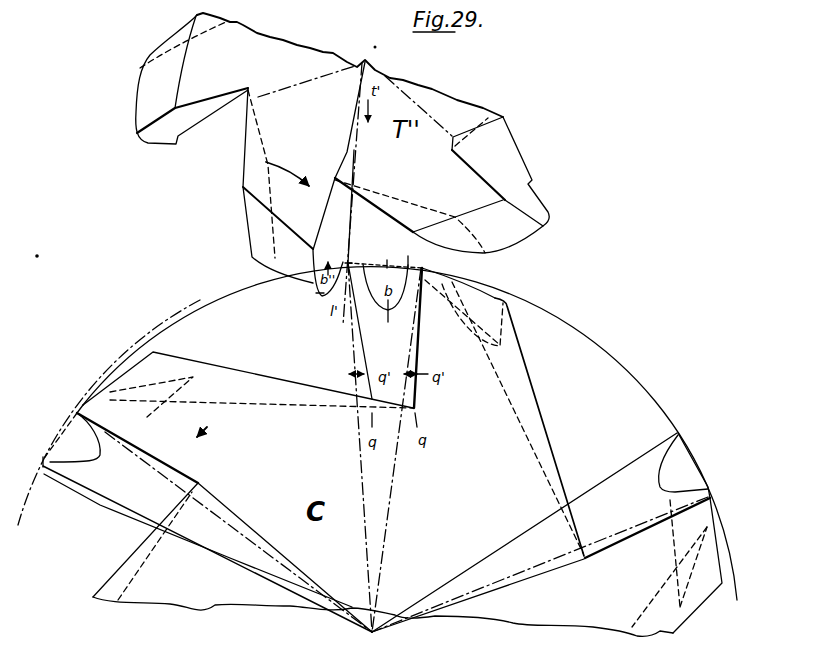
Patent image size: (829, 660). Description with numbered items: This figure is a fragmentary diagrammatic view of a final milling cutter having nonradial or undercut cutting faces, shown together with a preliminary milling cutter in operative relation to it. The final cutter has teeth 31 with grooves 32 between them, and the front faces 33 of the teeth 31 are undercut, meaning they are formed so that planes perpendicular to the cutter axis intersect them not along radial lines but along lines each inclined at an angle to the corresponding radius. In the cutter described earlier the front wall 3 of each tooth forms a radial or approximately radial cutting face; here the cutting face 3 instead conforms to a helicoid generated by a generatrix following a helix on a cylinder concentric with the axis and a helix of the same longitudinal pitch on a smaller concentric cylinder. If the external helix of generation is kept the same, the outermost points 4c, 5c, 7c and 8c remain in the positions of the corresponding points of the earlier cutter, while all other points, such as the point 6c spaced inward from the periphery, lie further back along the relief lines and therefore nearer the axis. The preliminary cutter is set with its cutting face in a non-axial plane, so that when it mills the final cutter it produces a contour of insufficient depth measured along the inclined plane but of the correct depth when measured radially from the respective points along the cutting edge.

The front wall 3 is at (95, 474).
The teeth 31 is at (140, 373).
The grooves 32 is at (300, 354).
The front faces 33 is at (367, 327).
The outermost point 4c is at (361, 248).
The outermost point 5c is at (386, 256).
The point spaced inward from the periphery 6c is at (390, 321).
The outermost point 7c is at (413, 251).
The outermost point 8c is at (424, 268).